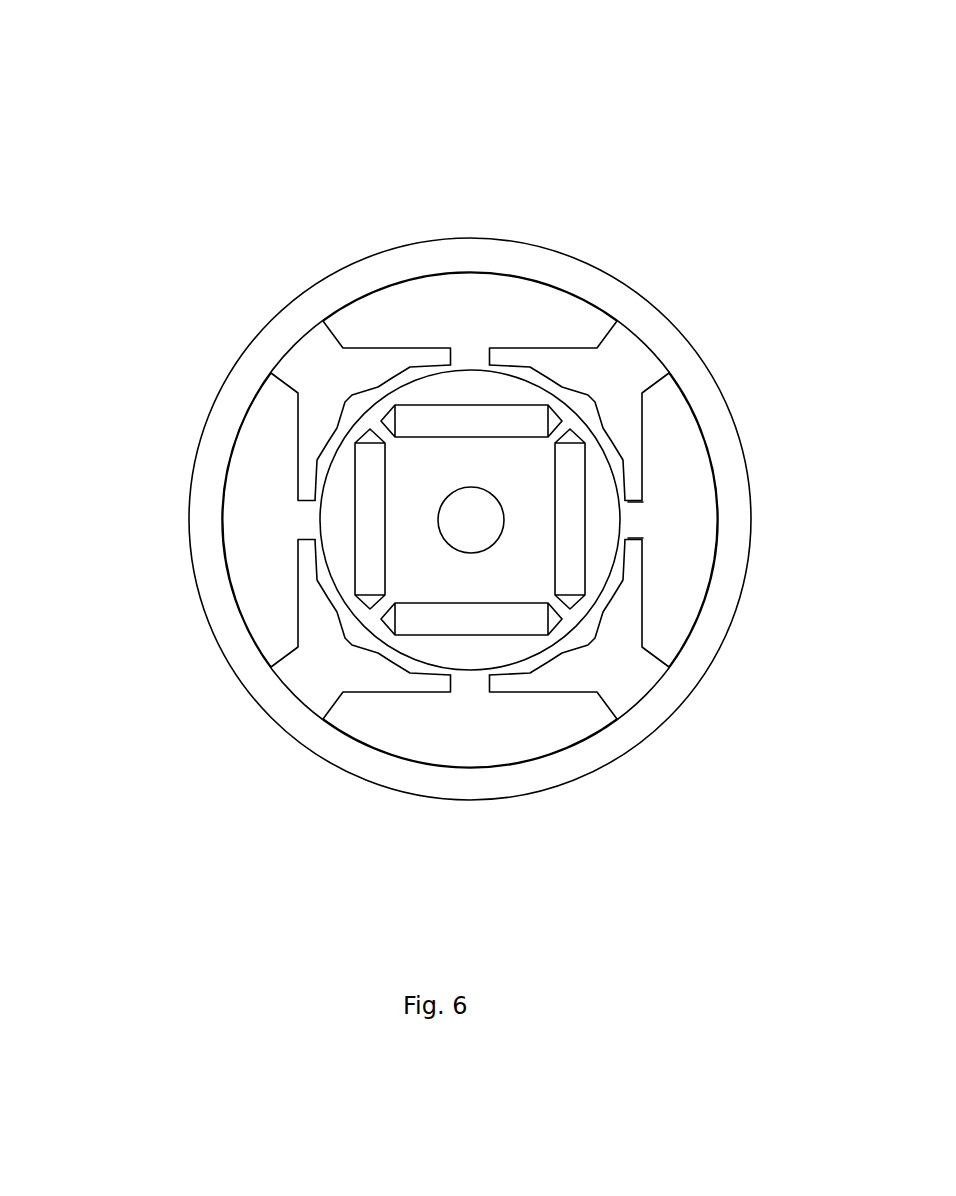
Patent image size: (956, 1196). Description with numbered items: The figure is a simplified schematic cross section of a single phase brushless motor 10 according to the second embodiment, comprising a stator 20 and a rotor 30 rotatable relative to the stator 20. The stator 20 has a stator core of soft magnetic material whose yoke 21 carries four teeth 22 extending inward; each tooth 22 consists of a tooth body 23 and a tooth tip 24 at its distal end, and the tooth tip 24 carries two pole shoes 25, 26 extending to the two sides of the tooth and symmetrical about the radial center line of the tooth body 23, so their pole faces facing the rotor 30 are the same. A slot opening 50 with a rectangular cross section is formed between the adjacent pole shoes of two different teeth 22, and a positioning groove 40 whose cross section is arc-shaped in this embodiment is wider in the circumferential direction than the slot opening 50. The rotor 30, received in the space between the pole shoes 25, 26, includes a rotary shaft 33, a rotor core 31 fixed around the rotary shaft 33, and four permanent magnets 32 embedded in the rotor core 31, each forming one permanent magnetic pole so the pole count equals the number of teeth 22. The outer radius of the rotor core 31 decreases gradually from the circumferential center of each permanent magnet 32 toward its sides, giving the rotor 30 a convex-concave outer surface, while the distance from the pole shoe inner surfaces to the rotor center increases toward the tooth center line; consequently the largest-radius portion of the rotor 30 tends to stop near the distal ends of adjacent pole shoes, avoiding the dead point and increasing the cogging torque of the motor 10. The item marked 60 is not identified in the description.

The single phase brushless motor 10 is at (482, 56).
The stator 20 is at (188, 531).
The yoke 21 is at (226, 602).
The tooth 22 is at (328, 704).
The tooth body 23 is at (300, 665).
The tooth tip 24 is at (341, 650).
The pole shoe 25 is at (525, 682).
The pole shoe 26 is at (630, 592).
The rotor 30 is at (464, 369).
The rotor core 31 is at (447, 403).
The permanent magnet 32 is at (366, 487).
The rotary shaft 33 is at (457, 512).
The positioning groove 40 is at (590, 630).
The slot opening 50 is at (630, 514).
The air gap 60 is at (607, 450).